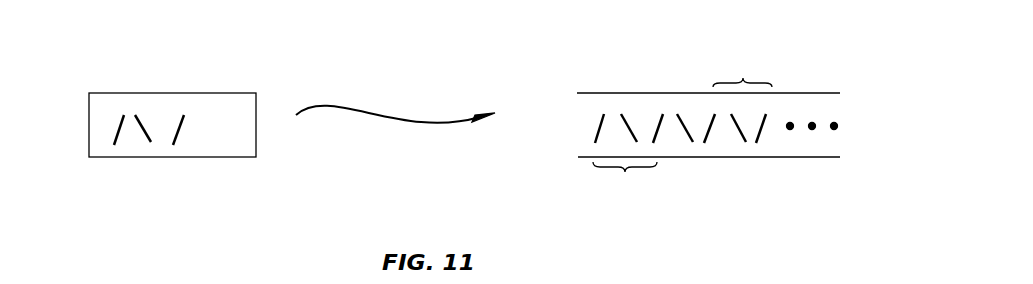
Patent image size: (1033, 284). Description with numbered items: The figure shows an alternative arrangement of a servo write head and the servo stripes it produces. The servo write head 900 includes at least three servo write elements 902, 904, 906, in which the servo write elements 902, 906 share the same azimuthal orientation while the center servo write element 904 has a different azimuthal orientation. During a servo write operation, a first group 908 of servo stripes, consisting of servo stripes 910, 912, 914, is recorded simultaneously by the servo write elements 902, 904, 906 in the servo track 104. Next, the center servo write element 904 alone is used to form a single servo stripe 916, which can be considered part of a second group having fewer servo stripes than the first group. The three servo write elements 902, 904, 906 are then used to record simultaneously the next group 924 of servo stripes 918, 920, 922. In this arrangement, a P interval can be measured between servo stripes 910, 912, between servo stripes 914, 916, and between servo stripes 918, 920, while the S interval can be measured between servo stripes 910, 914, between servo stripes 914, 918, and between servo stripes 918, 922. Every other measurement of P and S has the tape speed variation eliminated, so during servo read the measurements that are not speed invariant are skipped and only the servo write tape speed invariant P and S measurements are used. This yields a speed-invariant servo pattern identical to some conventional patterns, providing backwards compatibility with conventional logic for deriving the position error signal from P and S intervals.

The servo track 104 is at (823, 93).
The servo write head 900 is at (135, 93).
The servo write element 902 is at (119, 126).
The servo write element 904 is at (142, 130).
The servo write element 906 is at (180, 128).
The first group of servo stripes 908 is at (623, 175).
The servo stripe 910 is at (598, 118).
The servo stripe 912 is at (627, 120).
The servo stripe 914 is at (657, 122).
The single servo stripe 916 is at (687, 130).
The servo stripe 918 is at (707, 143).
The servo stripe 920 is at (745, 142).
The servo stripe 922 is at (766, 127).
The next group of servo stripes 924 is at (743, 78).